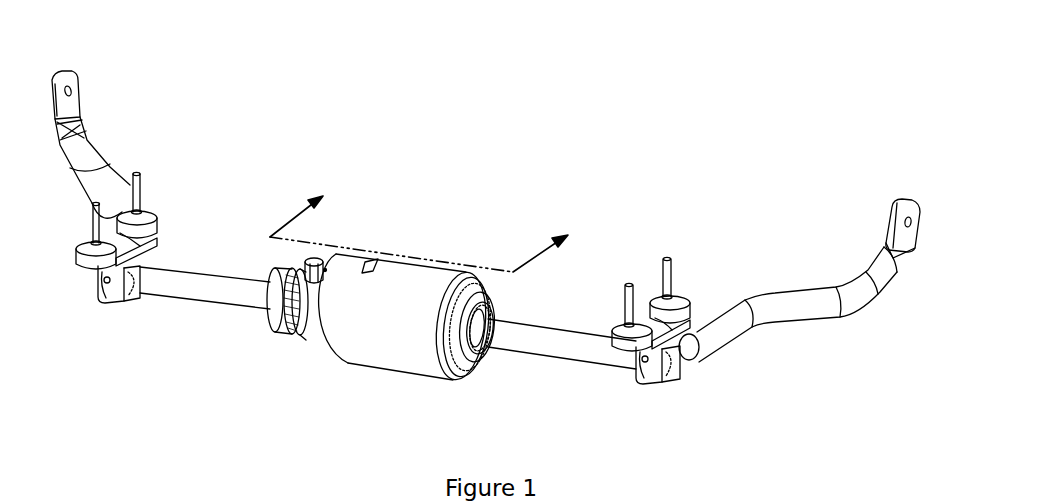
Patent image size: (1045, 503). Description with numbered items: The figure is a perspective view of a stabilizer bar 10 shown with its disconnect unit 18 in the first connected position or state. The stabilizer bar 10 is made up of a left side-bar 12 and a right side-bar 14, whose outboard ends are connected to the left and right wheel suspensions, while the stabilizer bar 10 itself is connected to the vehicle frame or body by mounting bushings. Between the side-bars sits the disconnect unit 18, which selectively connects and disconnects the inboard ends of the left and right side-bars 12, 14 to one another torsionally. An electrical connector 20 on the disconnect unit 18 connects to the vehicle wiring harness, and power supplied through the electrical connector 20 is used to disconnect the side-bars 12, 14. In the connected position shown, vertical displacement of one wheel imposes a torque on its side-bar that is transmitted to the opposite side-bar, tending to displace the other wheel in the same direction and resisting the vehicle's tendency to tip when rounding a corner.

The stabilizer bar 10 is at (556, 77).
The left side-bar 12 is at (87, 148).
The right side-bar 14 is at (808, 303).
The disconnect unit 18 is at (372, 355).
The electrical connector 20 is at (308, 263).